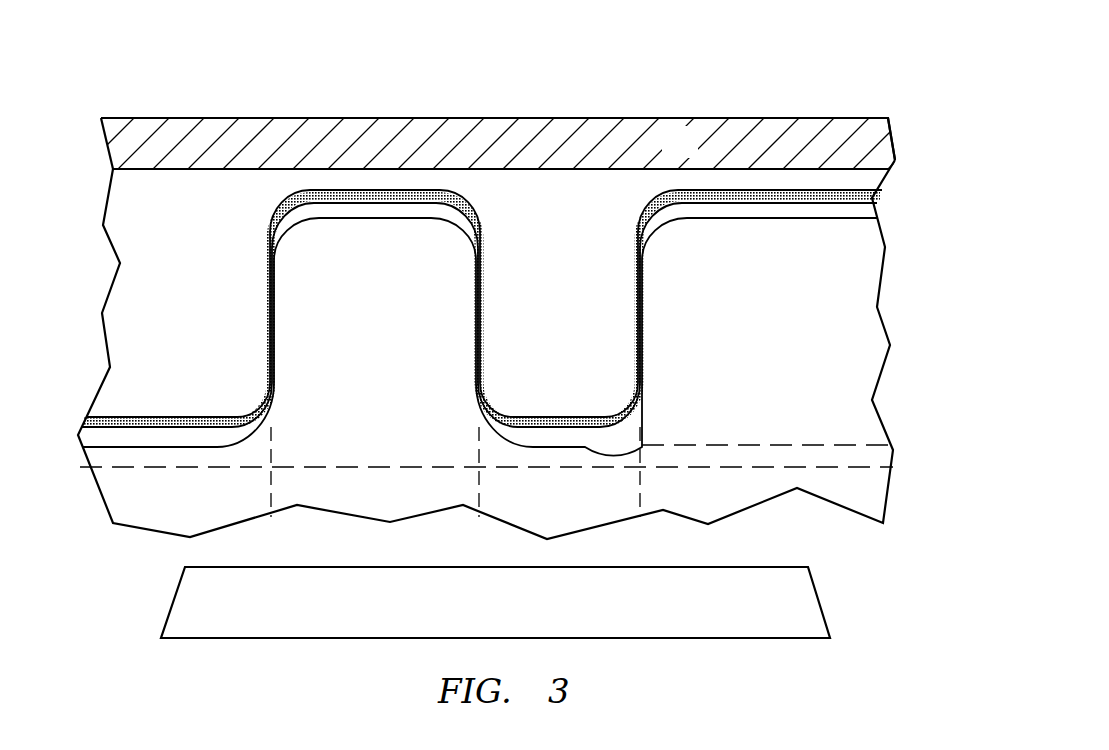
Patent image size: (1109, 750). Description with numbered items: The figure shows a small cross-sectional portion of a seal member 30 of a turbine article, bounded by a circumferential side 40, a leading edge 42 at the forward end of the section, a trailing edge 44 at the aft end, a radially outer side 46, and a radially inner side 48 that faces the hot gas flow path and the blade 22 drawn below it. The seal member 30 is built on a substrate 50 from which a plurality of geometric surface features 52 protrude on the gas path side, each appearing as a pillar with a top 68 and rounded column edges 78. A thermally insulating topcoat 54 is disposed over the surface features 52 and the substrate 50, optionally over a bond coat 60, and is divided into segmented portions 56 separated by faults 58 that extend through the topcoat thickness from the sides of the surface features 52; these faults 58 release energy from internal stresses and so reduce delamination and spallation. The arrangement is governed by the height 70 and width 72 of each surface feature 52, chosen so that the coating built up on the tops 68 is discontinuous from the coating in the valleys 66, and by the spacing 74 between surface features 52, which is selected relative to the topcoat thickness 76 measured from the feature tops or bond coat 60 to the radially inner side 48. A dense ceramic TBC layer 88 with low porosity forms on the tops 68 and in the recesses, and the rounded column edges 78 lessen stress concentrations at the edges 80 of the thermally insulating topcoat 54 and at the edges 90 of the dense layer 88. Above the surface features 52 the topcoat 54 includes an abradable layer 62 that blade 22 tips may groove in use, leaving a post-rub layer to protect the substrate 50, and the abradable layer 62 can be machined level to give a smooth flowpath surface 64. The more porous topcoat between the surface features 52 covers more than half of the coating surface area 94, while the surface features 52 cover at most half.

The blade 22 is at (830, 624).
The seal member 30 is at (679, 72).
The circumferential sides 40 is at (511, 104).
The leading edge 42 is at (103, 150).
The trailing edge 44 is at (897, 142).
The radially outer side 46 is at (497, 118).
The radially inner side 48 is at (112, 574).
The substrate 50 is at (666, 155).
The geometric surface features 52 is at (151, 256).
The thermally insulating topcoat 54 is at (323, 296).
The segmented portions 56 is at (351, 456).
The faults 58 is at (298, 424).
The bond coat 60 is at (287, 198).
The abradable layer 62 is at (883, 457).
The flowpath surface 64 is at (862, 467).
The valleys 66 is at (366, 184).
The top 68 is at (573, 416).
The height 70 is at (591, 415).
The width 72 is at (636, 293).
The spacing 74 is at (477, 355).
The thickness 76 is at (122, 430).
The rounded column edges 78 is at (495, 393).
The edges of the thermally insulating topcoat 80 is at (268, 266).
The dense ceramic layer TBC 88 is at (402, 210).
The edges of the dense layer 90 is at (654, 404).
The coating surface area 94 is at (863, 288).